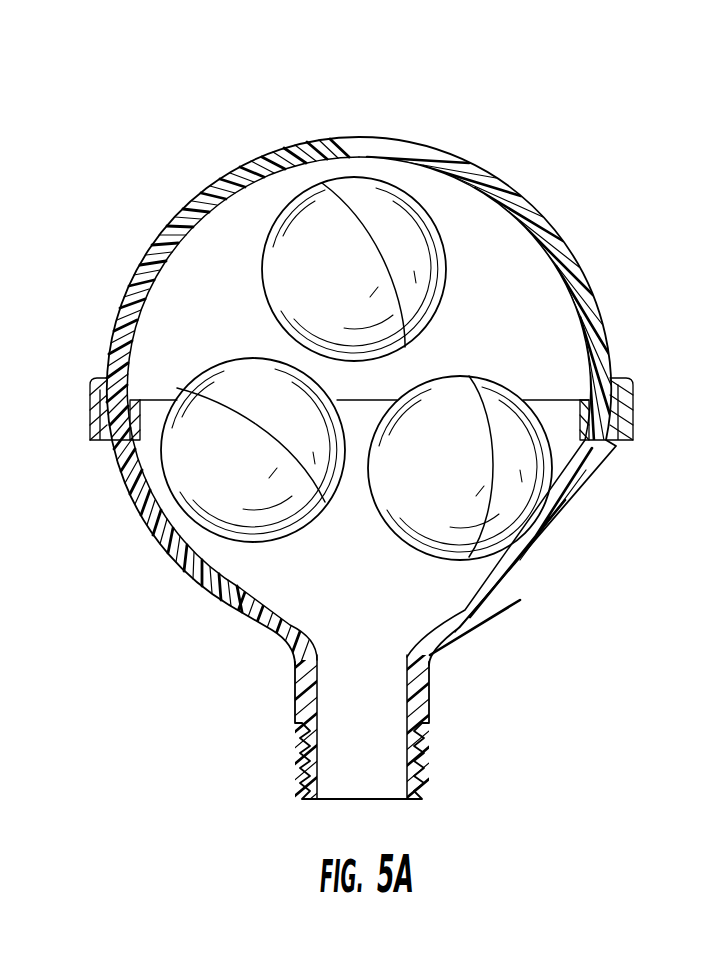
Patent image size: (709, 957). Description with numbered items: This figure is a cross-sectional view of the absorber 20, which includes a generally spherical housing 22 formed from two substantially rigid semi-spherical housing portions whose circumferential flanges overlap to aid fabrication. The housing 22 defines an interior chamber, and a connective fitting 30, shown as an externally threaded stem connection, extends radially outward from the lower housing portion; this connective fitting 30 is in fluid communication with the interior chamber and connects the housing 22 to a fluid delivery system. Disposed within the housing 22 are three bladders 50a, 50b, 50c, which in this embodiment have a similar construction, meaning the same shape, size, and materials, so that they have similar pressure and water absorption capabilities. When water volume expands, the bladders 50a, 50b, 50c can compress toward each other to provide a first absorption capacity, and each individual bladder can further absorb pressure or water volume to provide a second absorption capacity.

The absorber 20 is at (180, 147).
The housing 22 is at (377, 136).
The connective fitting 30 is at (418, 768).
The bladder 50a is at (400, 238).
The bladder 50b is at (505, 413).
The bladder 50c is at (202, 478).